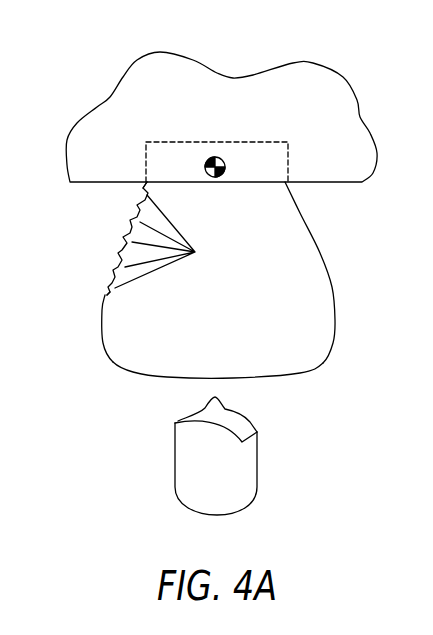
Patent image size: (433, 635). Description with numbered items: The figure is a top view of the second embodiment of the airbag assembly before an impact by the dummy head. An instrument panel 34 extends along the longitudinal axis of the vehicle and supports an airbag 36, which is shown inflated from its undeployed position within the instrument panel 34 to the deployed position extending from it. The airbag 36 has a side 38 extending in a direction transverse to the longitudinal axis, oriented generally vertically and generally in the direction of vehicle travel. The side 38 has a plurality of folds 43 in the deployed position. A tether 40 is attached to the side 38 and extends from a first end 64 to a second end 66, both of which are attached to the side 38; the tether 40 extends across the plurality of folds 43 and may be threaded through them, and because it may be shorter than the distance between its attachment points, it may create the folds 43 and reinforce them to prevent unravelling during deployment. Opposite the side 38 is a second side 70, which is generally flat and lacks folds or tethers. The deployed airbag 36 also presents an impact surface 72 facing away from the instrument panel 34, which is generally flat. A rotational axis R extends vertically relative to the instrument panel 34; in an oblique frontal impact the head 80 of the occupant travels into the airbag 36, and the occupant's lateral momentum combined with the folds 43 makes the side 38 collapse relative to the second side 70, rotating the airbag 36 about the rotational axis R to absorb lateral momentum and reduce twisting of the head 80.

The rotational axis R is at (215, 157).
The instrument panel 34 is at (338, 183).
The airbag 36 is at (214, 314).
The side 38 is at (105, 295).
The tether 40 is at (130, 242).
The plurality of folds 43 is at (171, 241).
The first end 64 is at (112, 298).
The second end 66 is at (150, 188).
The second side 70 is at (330, 280).
The impact surface 72 is at (282, 378).
The head 80 is at (257, 487).